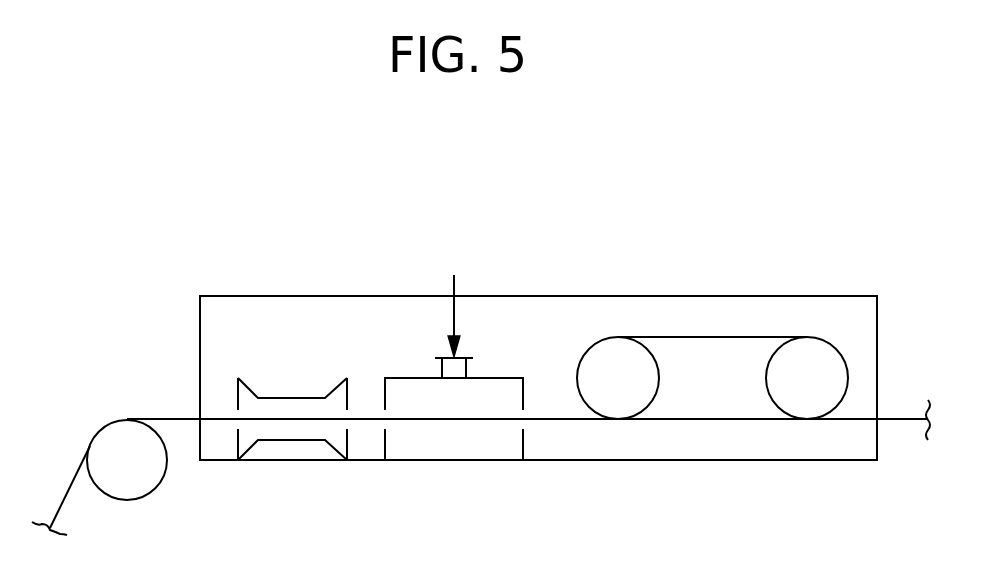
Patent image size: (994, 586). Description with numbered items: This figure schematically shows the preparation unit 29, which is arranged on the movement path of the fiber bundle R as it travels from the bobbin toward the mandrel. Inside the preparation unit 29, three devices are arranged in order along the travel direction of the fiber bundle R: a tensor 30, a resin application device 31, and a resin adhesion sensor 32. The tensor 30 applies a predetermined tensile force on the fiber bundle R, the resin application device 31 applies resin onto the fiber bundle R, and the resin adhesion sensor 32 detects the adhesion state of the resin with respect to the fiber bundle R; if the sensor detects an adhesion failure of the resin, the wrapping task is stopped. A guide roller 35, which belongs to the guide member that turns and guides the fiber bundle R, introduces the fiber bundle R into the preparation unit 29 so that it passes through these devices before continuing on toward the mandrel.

The preparation unit 29 is at (722, 296).
The tensor 30 is at (677, 335).
The resin application device 31 is at (495, 377).
The resin adhesion sensor 32 is at (305, 397).
The guide roller 35 is at (168, 472).
The fiber bundle R is at (897, 415).